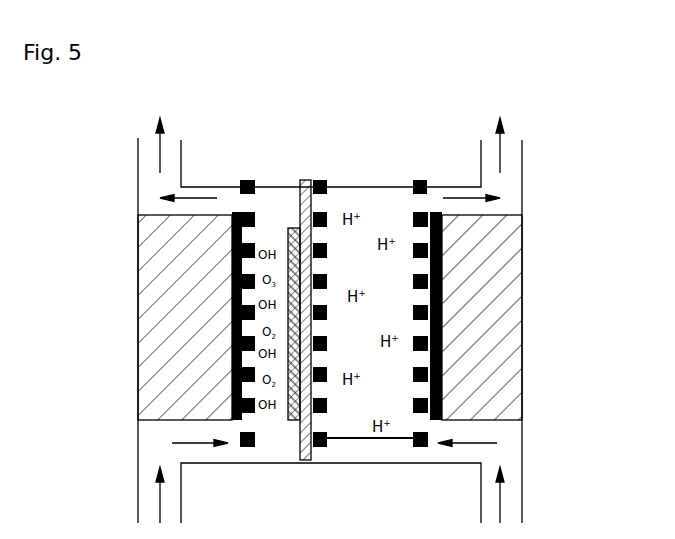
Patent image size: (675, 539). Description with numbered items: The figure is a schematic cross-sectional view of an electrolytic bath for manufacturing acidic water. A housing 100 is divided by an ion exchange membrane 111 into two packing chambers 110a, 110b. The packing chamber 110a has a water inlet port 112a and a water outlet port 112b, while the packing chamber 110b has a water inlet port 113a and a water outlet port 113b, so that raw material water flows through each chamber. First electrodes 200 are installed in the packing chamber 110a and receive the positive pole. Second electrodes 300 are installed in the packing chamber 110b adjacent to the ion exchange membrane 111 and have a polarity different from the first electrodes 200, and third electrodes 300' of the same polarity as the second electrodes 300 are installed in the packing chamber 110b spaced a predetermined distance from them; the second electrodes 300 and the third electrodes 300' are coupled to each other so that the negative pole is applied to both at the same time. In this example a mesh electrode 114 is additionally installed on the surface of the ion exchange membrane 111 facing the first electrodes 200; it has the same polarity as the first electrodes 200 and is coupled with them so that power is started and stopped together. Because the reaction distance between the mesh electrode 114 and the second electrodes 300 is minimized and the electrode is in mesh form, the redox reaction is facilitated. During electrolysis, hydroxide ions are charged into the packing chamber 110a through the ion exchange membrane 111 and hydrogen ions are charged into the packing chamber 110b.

The housing 100 is at (142, 376).
The packing chamber 110a is at (271, 441).
The packing chamber 110b is at (386, 198).
The ion exchange membrane 111 is at (302, 180).
The water inlet port 112a is at (145, 494).
The water outlet port 112b is at (152, 166).
The water inlet port 113a is at (515, 494).
The water outlet port 113b is at (513, 158).
The mesh electrode 114 is at (292, 228).
The first electrodes 200 is at (248, 447).
The second electrodes 300 is at (338, 289).
The third electrodes 300' is at (439, 266).